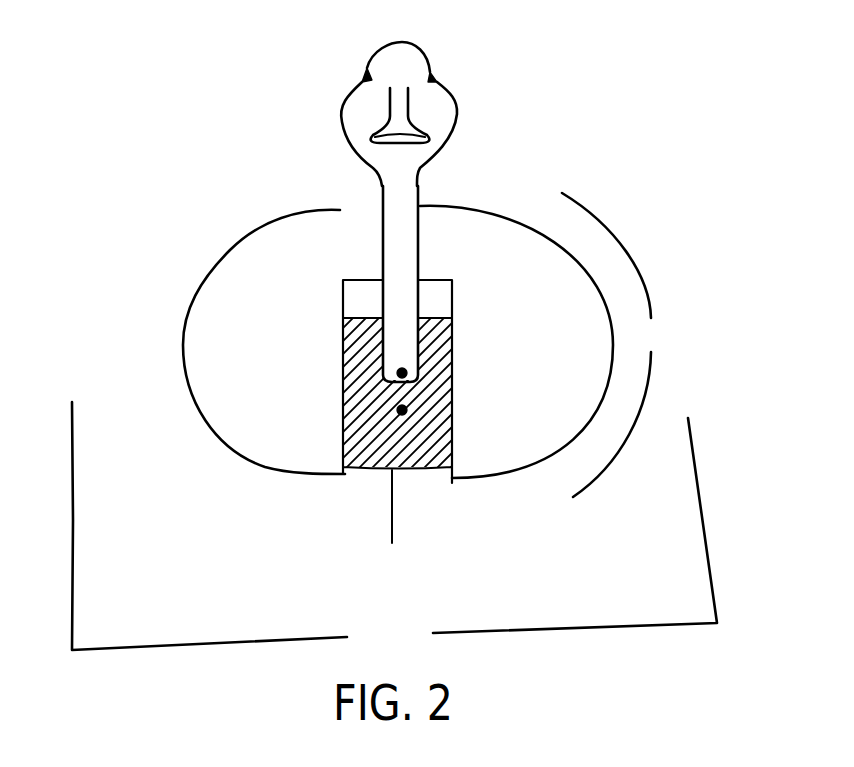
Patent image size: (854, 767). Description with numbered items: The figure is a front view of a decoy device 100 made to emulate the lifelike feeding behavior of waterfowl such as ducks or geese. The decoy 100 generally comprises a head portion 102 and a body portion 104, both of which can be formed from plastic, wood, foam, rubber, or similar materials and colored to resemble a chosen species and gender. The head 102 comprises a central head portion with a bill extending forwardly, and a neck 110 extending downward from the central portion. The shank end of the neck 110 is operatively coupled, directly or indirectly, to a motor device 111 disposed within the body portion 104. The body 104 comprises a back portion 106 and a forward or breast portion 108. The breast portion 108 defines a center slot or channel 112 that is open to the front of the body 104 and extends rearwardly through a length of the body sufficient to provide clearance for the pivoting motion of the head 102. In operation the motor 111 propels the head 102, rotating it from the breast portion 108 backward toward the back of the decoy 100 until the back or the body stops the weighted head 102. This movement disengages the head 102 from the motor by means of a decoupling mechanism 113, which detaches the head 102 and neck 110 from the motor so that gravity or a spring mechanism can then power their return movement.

The decoy device 100 is at (394, 532).
The head portion 102 is at (457, 117).
The body portion 104 is at (621, 345).
The back portion 106 is at (340, 212).
The breast portion 108 is at (263, 375).
The neck 110 is at (418, 238).
The motor device 111 is at (389, 525).
The center slot 112 is at (494, 280).
The decoupling mechanism 113 is at (402, 373).